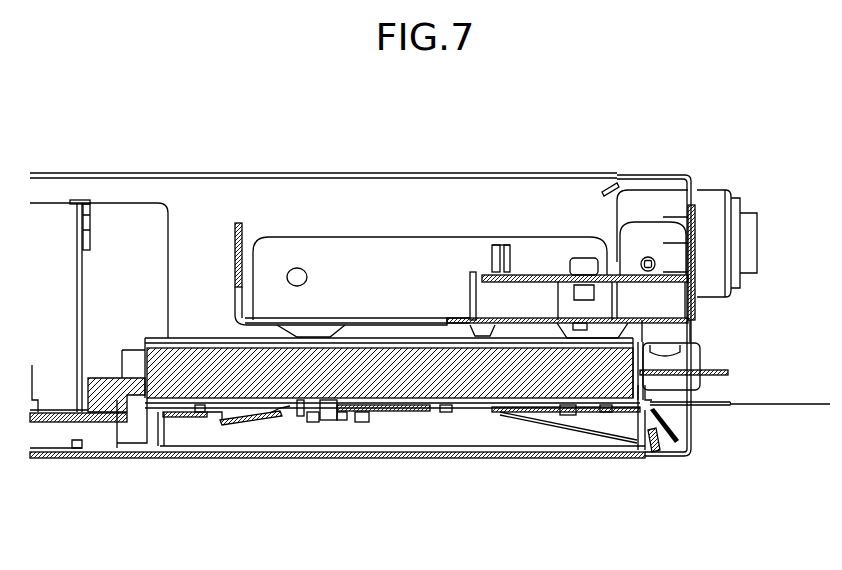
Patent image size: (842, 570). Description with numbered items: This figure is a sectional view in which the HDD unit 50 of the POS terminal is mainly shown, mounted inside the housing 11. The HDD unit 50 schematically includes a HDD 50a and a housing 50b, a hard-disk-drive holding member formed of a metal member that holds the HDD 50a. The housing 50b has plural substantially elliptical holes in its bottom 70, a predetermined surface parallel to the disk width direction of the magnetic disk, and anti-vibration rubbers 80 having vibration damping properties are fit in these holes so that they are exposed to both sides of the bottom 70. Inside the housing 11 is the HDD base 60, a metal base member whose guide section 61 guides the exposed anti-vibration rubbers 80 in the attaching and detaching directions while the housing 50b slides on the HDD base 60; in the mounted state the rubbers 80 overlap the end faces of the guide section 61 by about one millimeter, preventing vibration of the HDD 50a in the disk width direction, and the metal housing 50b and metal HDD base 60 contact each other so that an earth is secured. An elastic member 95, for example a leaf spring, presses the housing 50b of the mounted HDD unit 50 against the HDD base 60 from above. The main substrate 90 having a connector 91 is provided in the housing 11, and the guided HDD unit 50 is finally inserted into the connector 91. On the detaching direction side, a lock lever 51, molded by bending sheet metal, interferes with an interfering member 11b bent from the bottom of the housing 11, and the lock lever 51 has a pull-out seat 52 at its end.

The housing 11 is at (212, 455).
The interfering member 11b is at (657, 437).
The HDD unit 50 is at (394, 421).
The HDD 50a is at (490, 387).
The housing 50b is at (353, 418).
The lock lever 51 is at (600, 437).
The pull-out seat 52 is at (780, 405).
The HDD base 60 is at (175, 418).
The guide section 61 is at (382, 417).
The bottom 70 is at (253, 423).
The anti-vibration rubbers 80 is at (300, 403).
The main substrate 90 is at (47, 422).
The connector 91 is at (103, 405).
The elastic member 95 is at (288, 336).